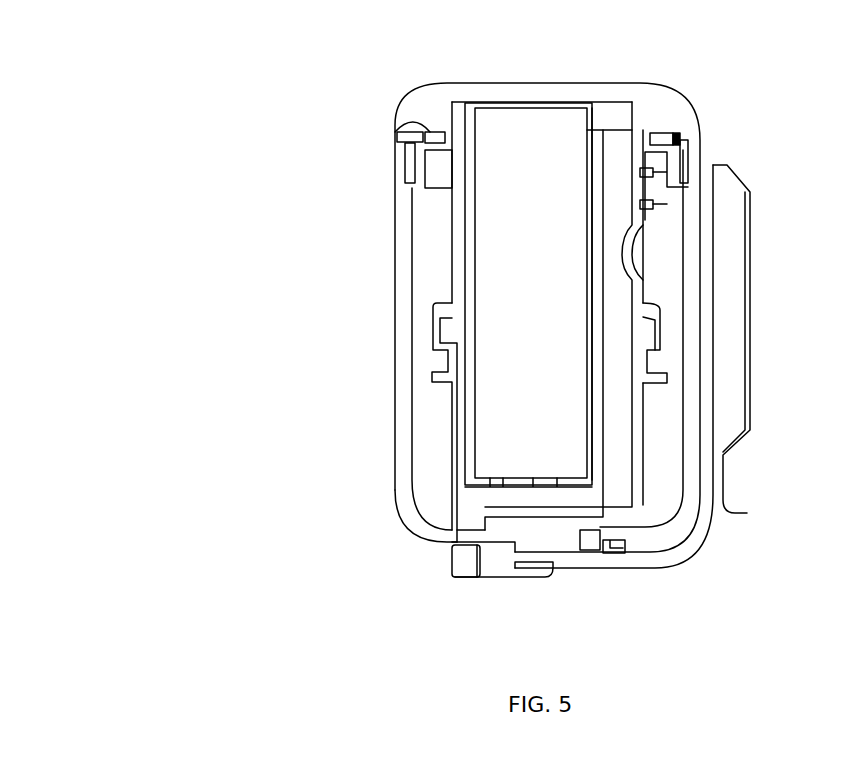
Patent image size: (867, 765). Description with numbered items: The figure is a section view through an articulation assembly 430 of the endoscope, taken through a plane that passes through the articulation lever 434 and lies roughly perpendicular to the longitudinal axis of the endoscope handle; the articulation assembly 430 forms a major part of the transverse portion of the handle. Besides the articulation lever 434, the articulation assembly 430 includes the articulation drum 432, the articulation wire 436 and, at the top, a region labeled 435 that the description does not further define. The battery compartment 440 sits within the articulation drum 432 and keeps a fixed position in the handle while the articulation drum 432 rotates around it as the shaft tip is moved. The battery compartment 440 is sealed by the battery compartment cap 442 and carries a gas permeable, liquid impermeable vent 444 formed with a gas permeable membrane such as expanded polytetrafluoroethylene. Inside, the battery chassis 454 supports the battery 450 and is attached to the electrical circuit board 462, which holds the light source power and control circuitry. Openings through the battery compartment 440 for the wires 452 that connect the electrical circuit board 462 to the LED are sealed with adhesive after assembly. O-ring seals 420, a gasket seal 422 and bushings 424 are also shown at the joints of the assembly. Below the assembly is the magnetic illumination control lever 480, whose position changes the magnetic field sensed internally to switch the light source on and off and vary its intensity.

The articulation assembly 430 is at (178, 186).
The articulation drum 432 is at (643, 430).
The articulation lever 434 is at (740, 513).
The bottom wall 435 is at (465, 517).
The articulation wire 436 is at (660, 362).
The battery compartment 440 is at (667, 310).
The battery compartment cap 442 is at (530, 83).
The gas permeable, liquid impermeable vent 444 is at (640, 252).
The battery 450 is at (503, 104).
The wires 452 is at (653, 204).
The battery chassis 454 is at (600, 130).
The electrical circuit board 462 is at (620, 402).
The O-ring seals 420 is at (396, 123).
The gasket seal 422 is at (405, 148).
The bushings 424 is at (447, 327).
The magnetic illumination control lever 480 is at (445, 578).